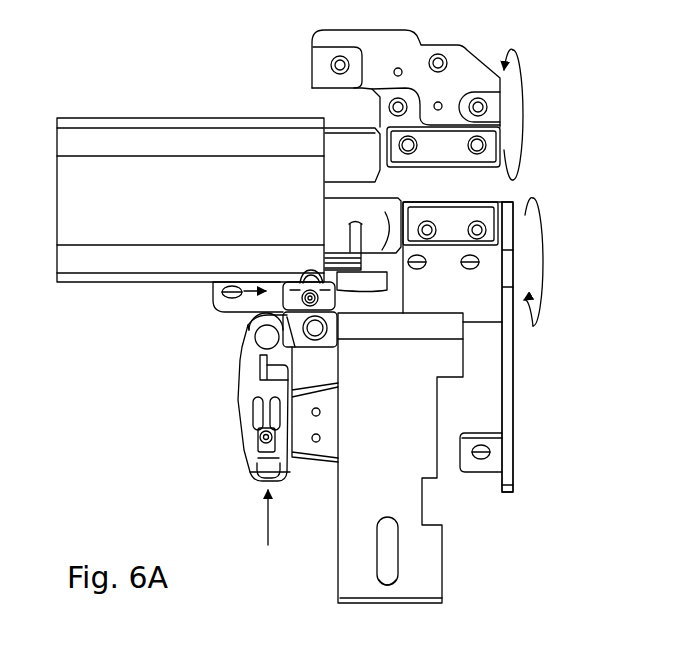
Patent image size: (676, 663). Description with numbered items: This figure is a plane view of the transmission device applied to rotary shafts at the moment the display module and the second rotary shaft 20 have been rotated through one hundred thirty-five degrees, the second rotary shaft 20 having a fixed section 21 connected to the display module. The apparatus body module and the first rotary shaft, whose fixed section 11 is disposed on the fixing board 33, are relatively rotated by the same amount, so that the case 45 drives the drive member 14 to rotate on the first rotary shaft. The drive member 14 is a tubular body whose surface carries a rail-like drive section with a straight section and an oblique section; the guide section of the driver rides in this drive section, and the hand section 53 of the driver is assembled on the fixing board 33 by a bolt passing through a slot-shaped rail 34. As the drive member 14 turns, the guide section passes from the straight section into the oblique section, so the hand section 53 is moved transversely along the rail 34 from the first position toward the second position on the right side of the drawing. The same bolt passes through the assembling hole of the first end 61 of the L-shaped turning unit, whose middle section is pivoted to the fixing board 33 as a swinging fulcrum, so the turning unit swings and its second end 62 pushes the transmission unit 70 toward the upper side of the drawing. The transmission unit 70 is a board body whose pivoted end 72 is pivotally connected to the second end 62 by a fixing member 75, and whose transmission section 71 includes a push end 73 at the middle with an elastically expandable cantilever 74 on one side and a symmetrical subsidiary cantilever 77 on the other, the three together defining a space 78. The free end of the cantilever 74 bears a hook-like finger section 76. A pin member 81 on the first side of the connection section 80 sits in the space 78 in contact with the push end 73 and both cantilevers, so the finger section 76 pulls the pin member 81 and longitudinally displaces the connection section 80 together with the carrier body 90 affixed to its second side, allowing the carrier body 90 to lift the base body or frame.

The fixed section 11 is at (487, 330).
The drive member 14 is at (348, 201).
The second rotary shaft 20 is at (391, 121).
The fixed section 21 is at (493, 143).
The fixing board 33 is at (488, 273).
The rail 34 is at (340, 289).
The case 45 is at (112, 138).
The hand section 53 is at (300, 280).
The first end 61 is at (290, 283).
The second end 62 is at (250, 312).
The transmission unit 70 is at (248, 435).
The transmission section 71 is at (226, 438).
The pivoted end 72 is at (242, 363).
The push end 73 is at (256, 408).
The cantilever 74 is at (248, 457).
The fixing member 75 is at (258, 338).
The finger section 76 is at (274, 481).
The subsidiary cantilever 77 is at (285, 467).
The space 78 is at (255, 467).
The connection section 80 is at (345, 413).
The pin member 81 is at (322, 444).
The carrier body 90 is at (437, 396).